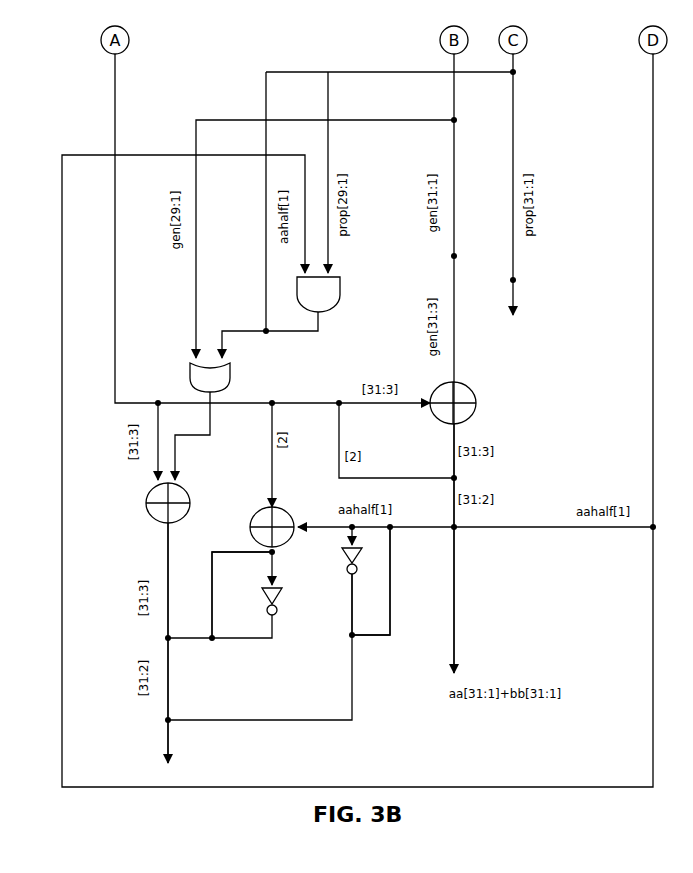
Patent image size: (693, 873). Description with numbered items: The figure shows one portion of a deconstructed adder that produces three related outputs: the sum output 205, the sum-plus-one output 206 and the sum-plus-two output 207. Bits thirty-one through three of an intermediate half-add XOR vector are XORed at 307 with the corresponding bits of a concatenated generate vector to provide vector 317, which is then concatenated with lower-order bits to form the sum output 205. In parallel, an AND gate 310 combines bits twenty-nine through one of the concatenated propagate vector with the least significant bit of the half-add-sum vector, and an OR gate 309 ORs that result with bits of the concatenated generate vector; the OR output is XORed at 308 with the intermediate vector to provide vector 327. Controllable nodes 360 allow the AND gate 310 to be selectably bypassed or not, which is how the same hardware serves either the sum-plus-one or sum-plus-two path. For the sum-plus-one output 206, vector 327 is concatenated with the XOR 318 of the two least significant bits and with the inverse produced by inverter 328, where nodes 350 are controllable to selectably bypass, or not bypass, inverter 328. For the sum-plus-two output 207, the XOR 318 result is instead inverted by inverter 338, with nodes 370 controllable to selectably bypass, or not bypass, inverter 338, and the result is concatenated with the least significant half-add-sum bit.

The sum output 205 is at (455, 563).
The sum-plus-1 output 206 is at (226, 700).
The sum-plus-2 output 207 is at (170, 739).
The XOR 307 is at (474, 392).
The XOR 308 is at (147, 506).
The OR 309 is at (190, 377).
The AND 310 is at (340, 284).
The vector 317 is at (453, 448).
The XOR 318 is at (268, 507).
The vector 327 is at (167, 550).
The inverter 328 is at (346, 557).
The inverter 338 is at (278, 612).
The nodes 350 is at (355, 530).
The nodes 360 is at (328, 72).
The nodes 370 is at (270, 556).